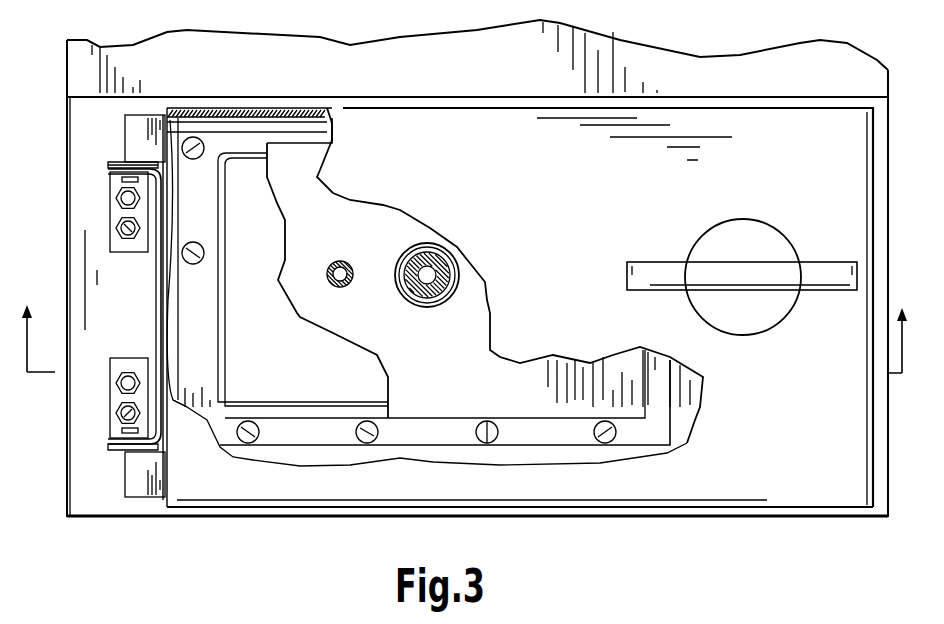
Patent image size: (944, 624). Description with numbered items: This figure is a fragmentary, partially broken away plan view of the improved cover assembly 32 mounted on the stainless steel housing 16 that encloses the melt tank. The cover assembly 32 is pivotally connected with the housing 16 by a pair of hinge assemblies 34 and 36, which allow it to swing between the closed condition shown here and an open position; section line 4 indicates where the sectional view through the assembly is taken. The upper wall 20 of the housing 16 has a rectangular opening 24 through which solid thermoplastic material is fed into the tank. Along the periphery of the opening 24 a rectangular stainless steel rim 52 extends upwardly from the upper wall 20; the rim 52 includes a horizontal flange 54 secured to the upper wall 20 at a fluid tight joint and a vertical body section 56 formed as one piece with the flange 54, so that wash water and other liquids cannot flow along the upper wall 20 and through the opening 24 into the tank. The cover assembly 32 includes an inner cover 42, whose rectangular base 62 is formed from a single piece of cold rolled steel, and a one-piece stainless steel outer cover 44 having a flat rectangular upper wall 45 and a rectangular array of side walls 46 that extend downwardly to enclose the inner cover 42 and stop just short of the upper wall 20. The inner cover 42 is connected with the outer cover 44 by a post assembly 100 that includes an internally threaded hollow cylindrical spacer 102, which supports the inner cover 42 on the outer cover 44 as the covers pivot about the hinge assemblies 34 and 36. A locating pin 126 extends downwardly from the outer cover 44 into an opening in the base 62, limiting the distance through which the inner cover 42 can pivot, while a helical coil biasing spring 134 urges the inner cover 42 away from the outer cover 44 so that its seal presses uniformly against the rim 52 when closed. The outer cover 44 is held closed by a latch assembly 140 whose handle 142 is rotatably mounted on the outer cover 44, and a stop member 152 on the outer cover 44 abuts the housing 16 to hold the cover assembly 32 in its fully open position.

The section line 4- 4 is at (467, 325).
The housing 16 is at (90, 126).
The upper wall 20 is at (87, 170).
The rectangular opening 24 is at (306, 282).
The cover assembly 32 is at (724, 516).
The hinge assembly 34 is at (87, 178).
The hinge assembly 36 is at (97, 447).
The inner cover 42 is at (362, 200).
The outer cover 44 is at (797, 137).
The upper wall 45 is at (795, 475).
The side walls 46 is at (257, 107).
The rim 52 is at (302, 452).
The horizontal flange 54 is at (332, 437).
The vertical body section 56 is at (227, 270).
The base 62 is at (493, 388).
The post assembly 100 is at (465, 242).
The spacer 102 is at (415, 300).
The locating pin 126 is at (343, 253).
The biasing spring 134 is at (458, 273).
The latch assembly 140 is at (808, 248).
The handle 142 is at (820, 275).
The stop member 152 is at (137, 110).